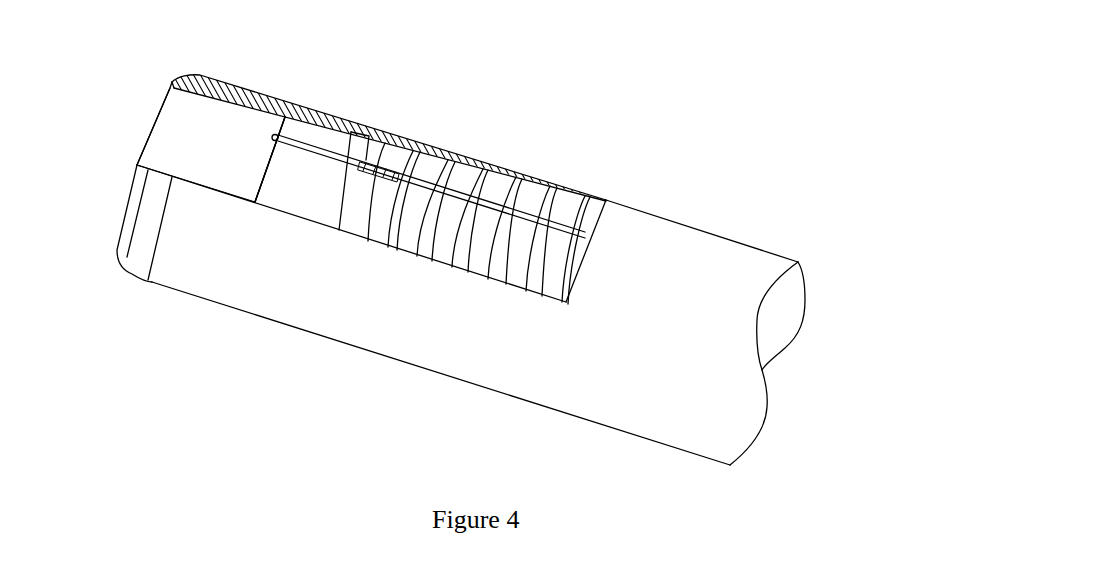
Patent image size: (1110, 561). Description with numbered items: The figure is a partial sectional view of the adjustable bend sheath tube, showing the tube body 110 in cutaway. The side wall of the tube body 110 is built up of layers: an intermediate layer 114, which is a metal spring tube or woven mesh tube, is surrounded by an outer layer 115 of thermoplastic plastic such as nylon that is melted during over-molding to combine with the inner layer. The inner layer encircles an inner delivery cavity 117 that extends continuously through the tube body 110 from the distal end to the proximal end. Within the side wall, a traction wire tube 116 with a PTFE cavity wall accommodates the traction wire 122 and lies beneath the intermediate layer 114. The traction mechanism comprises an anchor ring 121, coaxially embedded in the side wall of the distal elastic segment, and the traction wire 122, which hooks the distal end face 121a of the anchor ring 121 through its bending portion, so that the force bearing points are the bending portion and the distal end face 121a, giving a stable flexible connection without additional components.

The tube body 110 is at (686, 224).
The intermediate layer 114 is at (423, 145).
The outer layer 115 is at (268, 95).
The traction wire tube 116 is at (460, 156).
The inner delivery cavity 117 is at (167, 138).
The anchor ring 121 is at (302, 192).
The distal end face 121a is at (262, 173).
The traction wire 122 is at (340, 132).